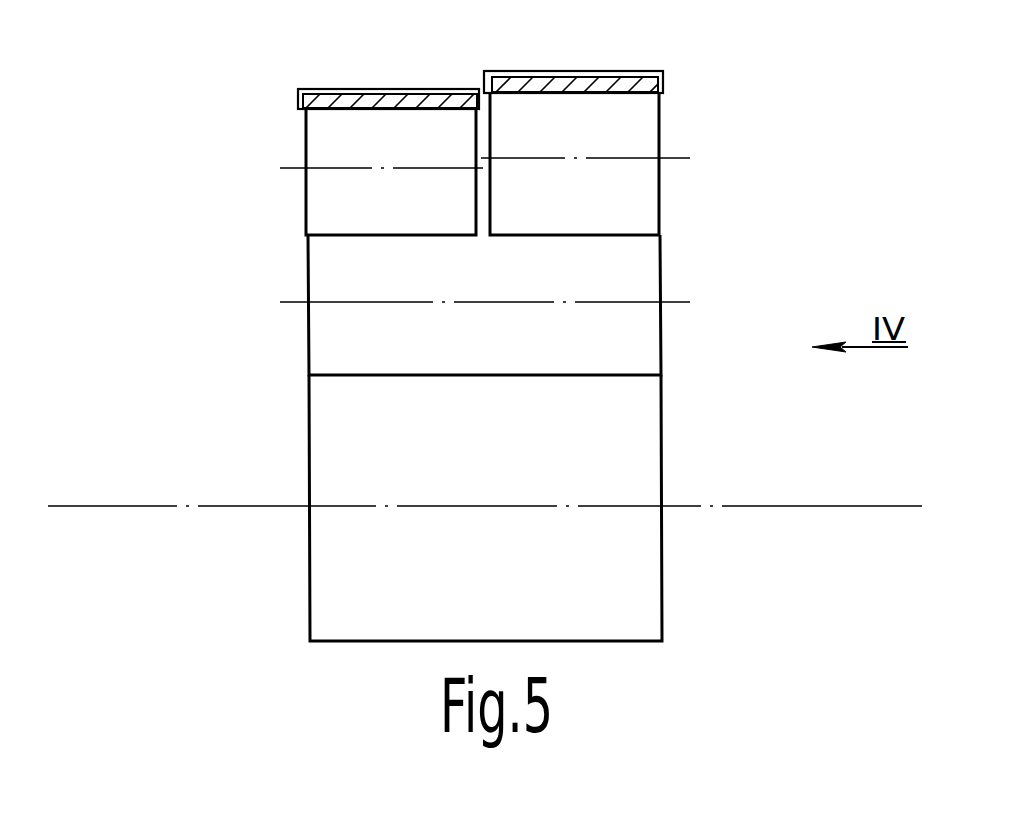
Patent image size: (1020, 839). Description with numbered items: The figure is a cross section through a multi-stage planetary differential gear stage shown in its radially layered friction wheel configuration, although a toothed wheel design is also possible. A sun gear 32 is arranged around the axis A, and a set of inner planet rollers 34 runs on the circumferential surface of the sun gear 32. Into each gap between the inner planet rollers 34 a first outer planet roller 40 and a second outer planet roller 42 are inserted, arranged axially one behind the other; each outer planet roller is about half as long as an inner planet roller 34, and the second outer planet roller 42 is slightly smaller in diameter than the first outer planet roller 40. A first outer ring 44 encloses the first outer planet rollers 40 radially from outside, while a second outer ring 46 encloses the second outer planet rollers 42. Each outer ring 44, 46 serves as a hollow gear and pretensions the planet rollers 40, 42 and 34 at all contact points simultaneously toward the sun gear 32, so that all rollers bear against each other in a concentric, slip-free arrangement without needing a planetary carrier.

The sun gear 32 is at (634, 451).
The inner planet roller 34 is at (635, 280).
The first outer planet roller 40 is at (633, 197).
The second outer planet roller 42 is at (335, 193).
The first outer ring 44 is at (663, 82).
The second outer ring 46 is at (297, 102).
The axis A is at (103, 507).